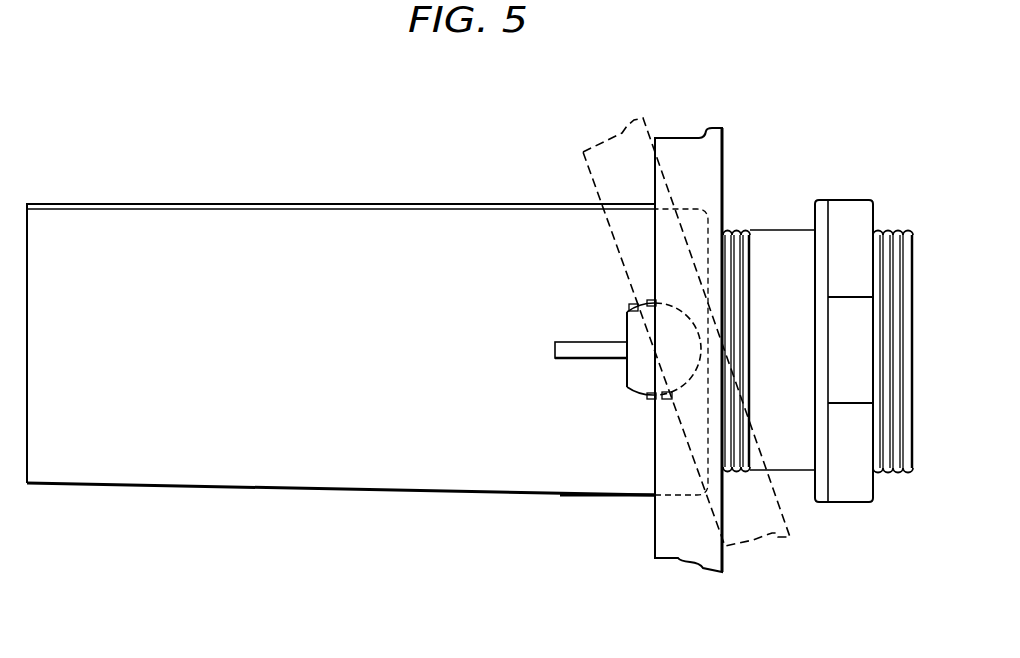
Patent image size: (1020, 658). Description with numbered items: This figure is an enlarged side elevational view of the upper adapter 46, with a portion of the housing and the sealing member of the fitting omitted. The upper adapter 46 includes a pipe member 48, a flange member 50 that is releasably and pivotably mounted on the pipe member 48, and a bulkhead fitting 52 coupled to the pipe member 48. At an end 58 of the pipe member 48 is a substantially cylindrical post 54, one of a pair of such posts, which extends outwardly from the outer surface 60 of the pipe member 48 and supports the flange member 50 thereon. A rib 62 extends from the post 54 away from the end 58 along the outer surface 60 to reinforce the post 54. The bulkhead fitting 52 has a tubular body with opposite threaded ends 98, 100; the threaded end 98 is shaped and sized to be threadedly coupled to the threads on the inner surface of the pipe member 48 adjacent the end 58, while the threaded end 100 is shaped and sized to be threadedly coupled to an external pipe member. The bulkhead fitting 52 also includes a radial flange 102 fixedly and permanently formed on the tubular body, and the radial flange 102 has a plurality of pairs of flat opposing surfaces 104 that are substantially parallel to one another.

The upper adapter 46 is at (660, 104).
The pipe member 48 is at (296, 496).
The flange member 50 is at (679, 565).
The bulkhead fitting 52 is at (855, 514).
The cylindrical post 54 is at (633, 372).
The end of pipe member 58 is at (613, 480).
The outer surface 60 is at (232, 230).
The rib 62 is at (577, 342).
The threaded end 98 is at (748, 247).
The threaded end 100 is at (890, 230).
The radial flange 102 is at (818, 200).
The flat opposing surfaces 104 is at (848, 200).